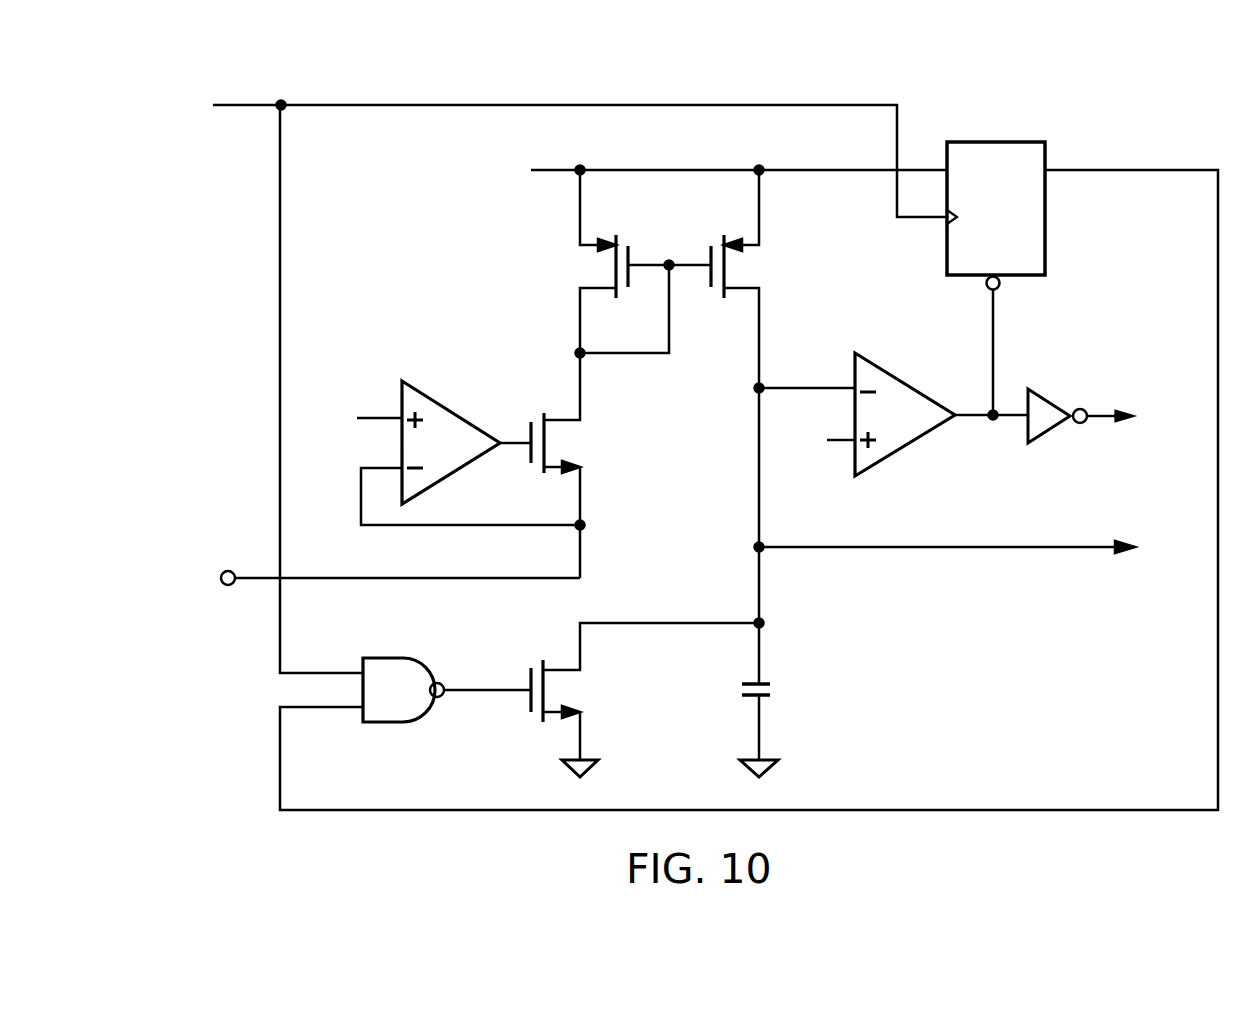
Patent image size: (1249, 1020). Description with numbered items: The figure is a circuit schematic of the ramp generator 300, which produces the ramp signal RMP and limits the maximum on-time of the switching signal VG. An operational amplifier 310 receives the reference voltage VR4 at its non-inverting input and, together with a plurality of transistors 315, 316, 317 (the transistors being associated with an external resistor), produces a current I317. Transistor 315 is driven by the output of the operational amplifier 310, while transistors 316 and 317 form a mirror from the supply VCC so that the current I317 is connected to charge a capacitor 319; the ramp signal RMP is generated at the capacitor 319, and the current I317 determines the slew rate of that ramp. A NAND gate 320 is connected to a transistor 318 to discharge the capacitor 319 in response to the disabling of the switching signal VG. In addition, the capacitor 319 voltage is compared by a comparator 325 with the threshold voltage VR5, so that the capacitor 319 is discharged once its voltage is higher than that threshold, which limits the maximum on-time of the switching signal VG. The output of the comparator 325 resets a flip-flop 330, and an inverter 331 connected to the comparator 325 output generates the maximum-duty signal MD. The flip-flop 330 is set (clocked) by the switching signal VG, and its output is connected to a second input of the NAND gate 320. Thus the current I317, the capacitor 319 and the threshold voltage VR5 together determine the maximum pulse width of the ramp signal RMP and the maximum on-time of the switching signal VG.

The ramp generator 300 is at (1200, 53).
The operational amplifier 310 is at (445, 403).
The transistor 315 is at (582, 443).
The transistor 316 is at (580, 268).
The transistor 317 is at (757, 272).
The transistor 318 is at (580, 693).
The capacitor 319 is at (775, 687).
The NAND gate 320 is at (385, 656).
The comparator 325 is at (905, 380).
The flip-flop 330 is at (1017, 140).
The inverter 331 is at (1057, 395).